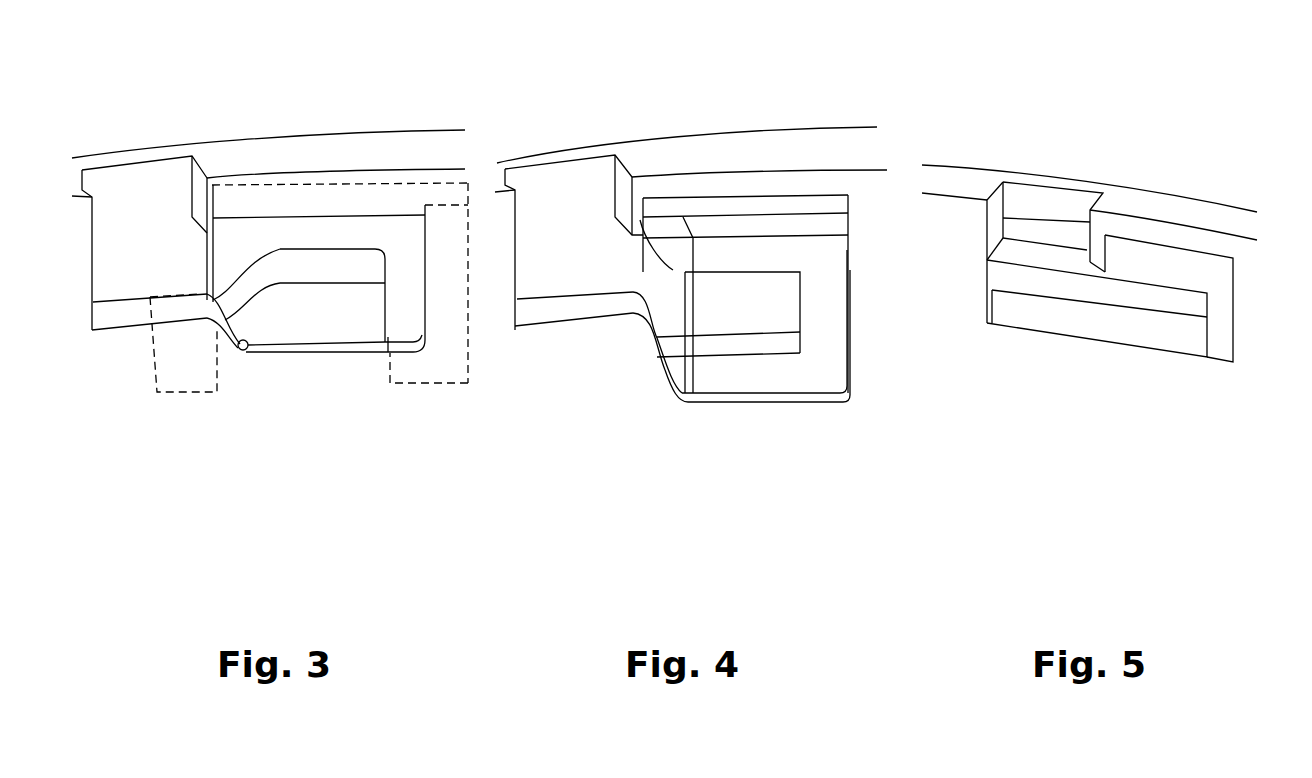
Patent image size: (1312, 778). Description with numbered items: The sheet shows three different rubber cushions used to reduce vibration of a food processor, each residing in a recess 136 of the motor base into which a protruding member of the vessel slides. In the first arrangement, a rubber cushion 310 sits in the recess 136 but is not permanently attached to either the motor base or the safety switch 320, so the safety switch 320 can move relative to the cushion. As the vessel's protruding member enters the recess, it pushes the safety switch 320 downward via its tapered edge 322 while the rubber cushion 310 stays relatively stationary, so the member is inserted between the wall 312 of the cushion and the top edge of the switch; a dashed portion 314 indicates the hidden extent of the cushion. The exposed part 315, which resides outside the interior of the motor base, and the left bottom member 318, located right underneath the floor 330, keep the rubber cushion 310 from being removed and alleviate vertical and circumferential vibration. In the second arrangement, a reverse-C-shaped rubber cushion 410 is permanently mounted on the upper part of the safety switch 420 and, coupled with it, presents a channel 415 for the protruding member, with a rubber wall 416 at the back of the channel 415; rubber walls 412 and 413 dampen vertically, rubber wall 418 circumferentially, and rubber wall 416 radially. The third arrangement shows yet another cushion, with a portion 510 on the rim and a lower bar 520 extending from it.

In FIG. 3, the recess 136 is at (140, 210).
In FIG. 4, the recess 136 is at (580, 240).
In FIG. 5, the recess 136 is at (1038, 225).
In FIG. 3, the rubber cushion 310 is at (413, 225).
In FIG. 3, the wall of the rubber cushion 312 is at (292, 225).
In FIG. 3, the housing side wall 314 is at (445, 327).
In FIG. 3, the exposed part 315 is at (412, 342).
In FIG. 3, the left bottom member 318 is at (187, 355).
In FIG. 3, the safety switch 320 is at (343, 277).
In FIG. 3, the tapered edge 322 is at (208, 257).
In FIG. 3, the floor 330 is at (247, 352).
In FIG. 4, the rubber cushion 410 is at (845, 300).
In FIG. 4, the rubber wall 412 is at (750, 250).
In FIG. 4, the rubber wall 413 is at (752, 378).
In FIG. 4, the channel 415 is at (755, 313).
In FIG. 4, the rubber wall 416 is at (765, 287).
In FIG. 4, the rubber wall 418 is at (820, 277).
In FIG. 4, the safety switch 420 is at (633, 315).
In FIG. 5, the rim flange portion 510 is at (1157, 260).
In FIG. 5, the bracket bar 520 is at (1038, 277).